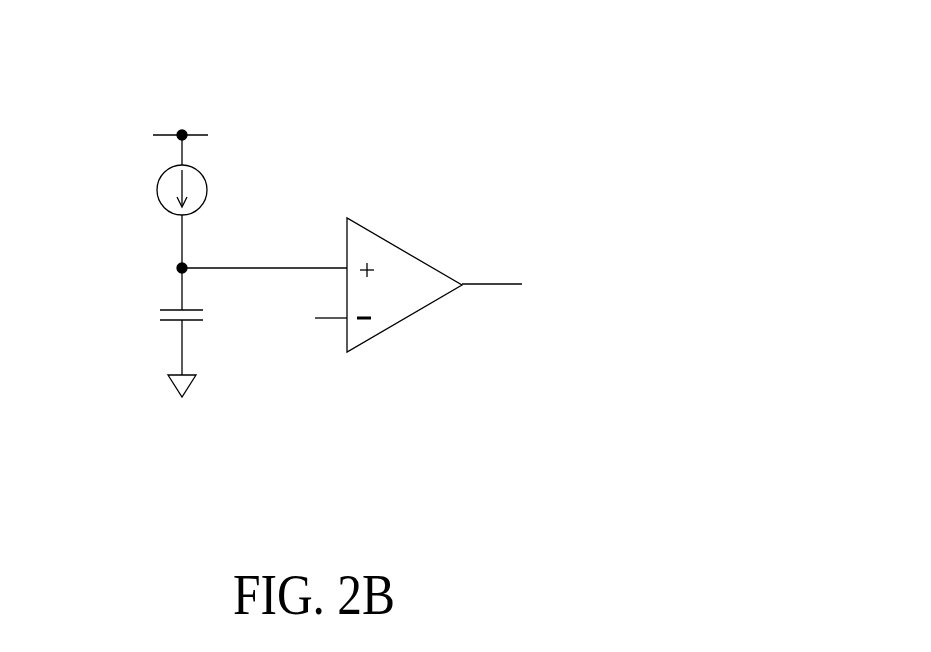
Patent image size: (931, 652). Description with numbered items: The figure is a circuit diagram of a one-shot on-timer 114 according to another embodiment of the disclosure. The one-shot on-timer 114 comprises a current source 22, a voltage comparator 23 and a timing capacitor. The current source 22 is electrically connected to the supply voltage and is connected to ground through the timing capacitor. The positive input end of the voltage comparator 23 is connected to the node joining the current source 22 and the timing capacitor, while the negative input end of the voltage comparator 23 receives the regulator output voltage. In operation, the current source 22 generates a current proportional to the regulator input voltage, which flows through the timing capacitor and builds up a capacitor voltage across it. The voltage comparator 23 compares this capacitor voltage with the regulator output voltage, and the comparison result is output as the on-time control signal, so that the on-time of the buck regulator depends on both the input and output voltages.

The one-shot on-timer 114 is at (458, 97).
The current source 22 is at (158, 188).
The voltage comparator 23 is at (397, 243).